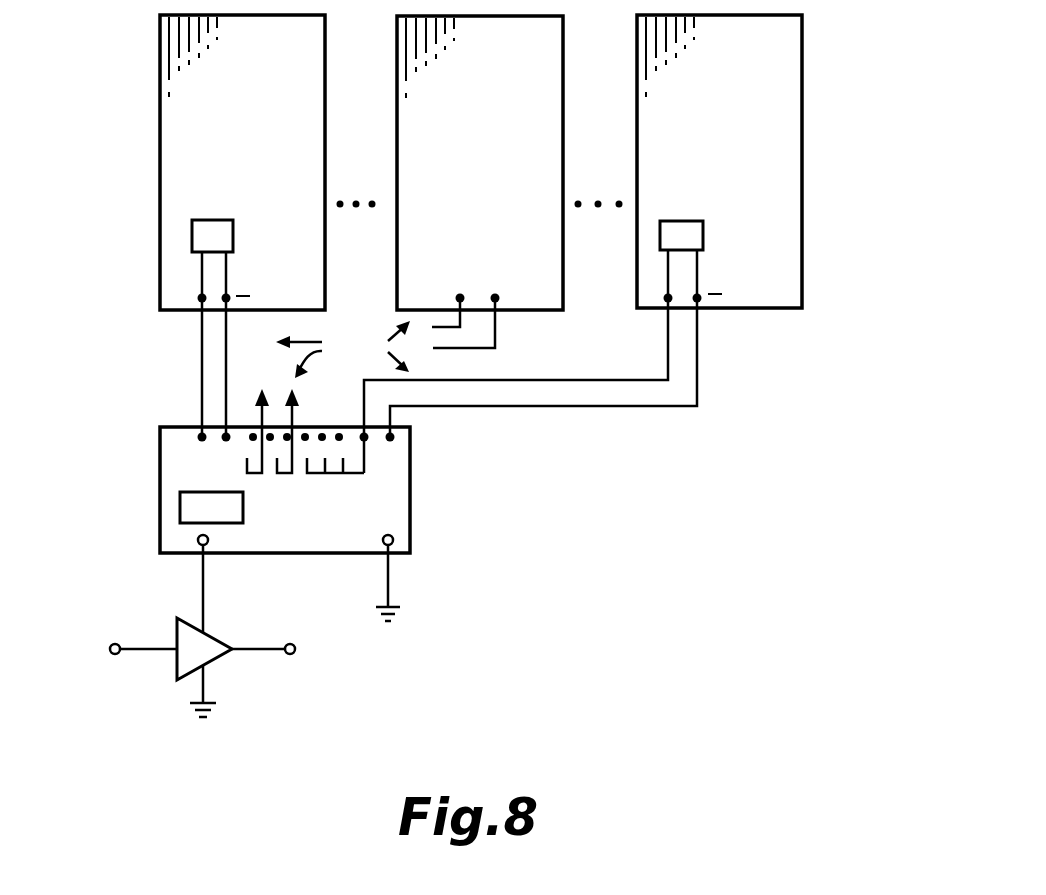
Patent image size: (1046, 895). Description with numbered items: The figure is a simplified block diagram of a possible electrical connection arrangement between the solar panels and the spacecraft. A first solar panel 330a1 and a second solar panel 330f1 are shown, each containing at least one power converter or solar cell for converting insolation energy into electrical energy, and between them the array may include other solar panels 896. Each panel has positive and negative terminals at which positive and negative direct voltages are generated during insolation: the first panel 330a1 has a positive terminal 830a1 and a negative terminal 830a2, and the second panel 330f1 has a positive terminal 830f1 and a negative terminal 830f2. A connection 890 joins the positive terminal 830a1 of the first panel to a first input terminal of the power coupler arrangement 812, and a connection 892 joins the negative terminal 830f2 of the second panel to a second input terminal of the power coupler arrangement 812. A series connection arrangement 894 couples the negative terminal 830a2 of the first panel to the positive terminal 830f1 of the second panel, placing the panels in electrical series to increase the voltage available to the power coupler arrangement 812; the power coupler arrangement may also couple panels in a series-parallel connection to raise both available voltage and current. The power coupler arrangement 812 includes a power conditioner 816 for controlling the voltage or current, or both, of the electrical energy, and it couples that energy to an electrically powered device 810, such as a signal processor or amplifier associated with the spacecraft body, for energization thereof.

The first solar panel 330a1 is at (160, 165).
The other solar panels 896 is at (563, 166).
The second solar panel 330f1 is at (803, 165).
The positive terminal of the first solar panel 830a1 is at (202, 298).
The negative terminal of the first solar panel 830a2 is at (226, 298).
The positive terminal of the second solar panel 830f1 is at (668, 298).
The negative terminal of the second solar panel 830f2 is at (697, 298).
The series connection arrangement 894 is at (343, 349).
The connection 890 is at (202, 397).
The connection 892 is at (697, 383).
The power coupler arrangement 812 is at (410, 508).
The power conditioner 816 is at (243, 507).
The electrically powered device 810 is at (215, 660).